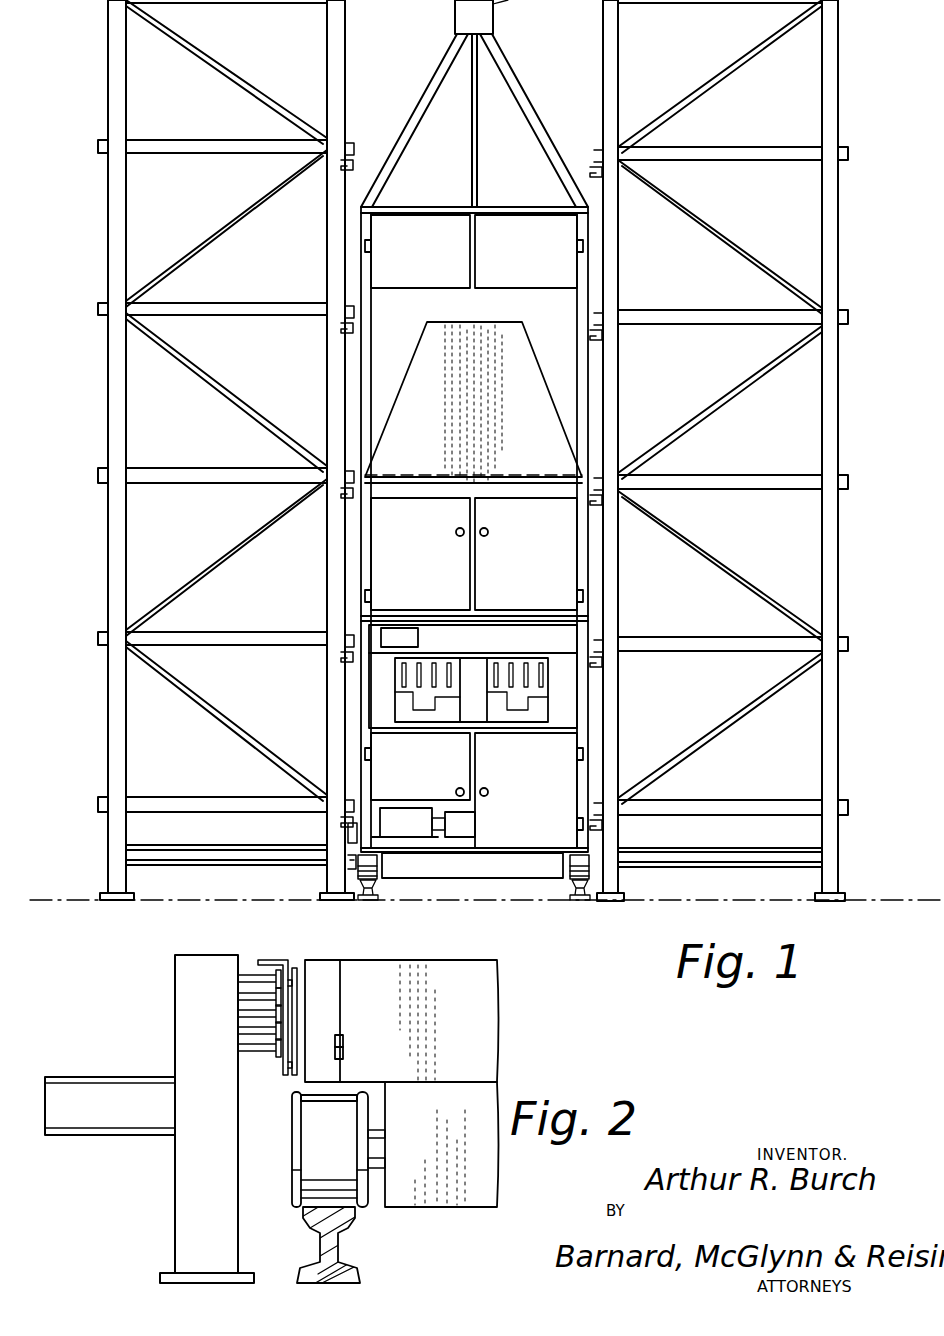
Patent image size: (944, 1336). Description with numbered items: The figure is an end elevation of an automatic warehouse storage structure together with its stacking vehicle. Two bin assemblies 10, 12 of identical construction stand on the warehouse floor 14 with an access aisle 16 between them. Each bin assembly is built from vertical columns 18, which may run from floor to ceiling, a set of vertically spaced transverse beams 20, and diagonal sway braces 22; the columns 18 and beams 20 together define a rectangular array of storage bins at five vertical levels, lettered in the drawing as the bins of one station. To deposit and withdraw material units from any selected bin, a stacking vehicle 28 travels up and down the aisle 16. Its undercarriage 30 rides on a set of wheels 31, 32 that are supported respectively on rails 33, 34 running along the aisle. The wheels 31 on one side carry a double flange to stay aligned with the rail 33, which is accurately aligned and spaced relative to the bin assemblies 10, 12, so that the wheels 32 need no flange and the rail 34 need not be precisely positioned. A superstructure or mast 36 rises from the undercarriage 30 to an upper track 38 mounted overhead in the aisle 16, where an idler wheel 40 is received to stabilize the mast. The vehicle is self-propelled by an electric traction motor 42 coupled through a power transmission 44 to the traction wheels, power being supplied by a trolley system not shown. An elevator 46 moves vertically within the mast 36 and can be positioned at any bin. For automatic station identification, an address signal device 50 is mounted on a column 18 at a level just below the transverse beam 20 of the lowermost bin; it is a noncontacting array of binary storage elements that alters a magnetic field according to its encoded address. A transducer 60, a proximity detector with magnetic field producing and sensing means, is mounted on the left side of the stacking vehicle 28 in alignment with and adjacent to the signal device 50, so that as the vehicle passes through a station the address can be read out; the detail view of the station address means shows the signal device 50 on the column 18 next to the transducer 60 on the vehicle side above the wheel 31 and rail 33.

In FIG. 1, the bin assembly 10 is at (220, 450).
In FIG. 1, the bin assembly 12 is at (850, 120).
In FIG. 1, the warehouse floor 14 is at (68, 896).
In FIG. 1, the access aisle 16 is at (477, 472).
In FIG. 1, the vertical column 18 is at (347, 96).
In FIG. 2, the vertical column 18 is at (183, 1010).
In FIG. 1, the transverse beam 20 is at (228, 128).
In FIG. 2, the transverse beam 20 is at (113, 1118).
In FIG. 1, the sway brace 22 is at (182, 688).
In FIG. 1, the stacking vehicle 28 is at (549, 140).
In FIG. 1, the undercarriage 30 is at (480, 868).
In FIG. 2, the undercarriage 30 is at (470, 1207).
In FIG. 1, the wheel 31 is at (383, 866).
In FIG. 2, the wheel 31 is at (292, 1148).
In FIG. 1, the wheel 32 is at (592, 868).
In FIG. 1, the rail 33 is at (374, 900).
In FIG. 2, the rail 33 is at (332, 1250).
In FIG. 1, the rail 34 is at (578, 900).
In FIG. 1, the mast 36 is at (590, 366).
In FIG. 1, the upper track 38 is at (506, 2).
In FIG. 1, the idler wheel 40 is at (455, 5).
In FIG. 1, the traction motor 42 is at (400, 814).
In FIG. 1, the power transmission 44 is at (468, 814).
In FIG. 1, the elevator 46 is at (525, 372).
In FIG. 1, the address signal device 50 is at (342, 832).
In FIG. 2, the address signal device 50 is at (256, 1054).
In FIG. 1, the transducer 60 is at (350, 862).
In FIG. 2, the transducer 60 is at (286, 960).